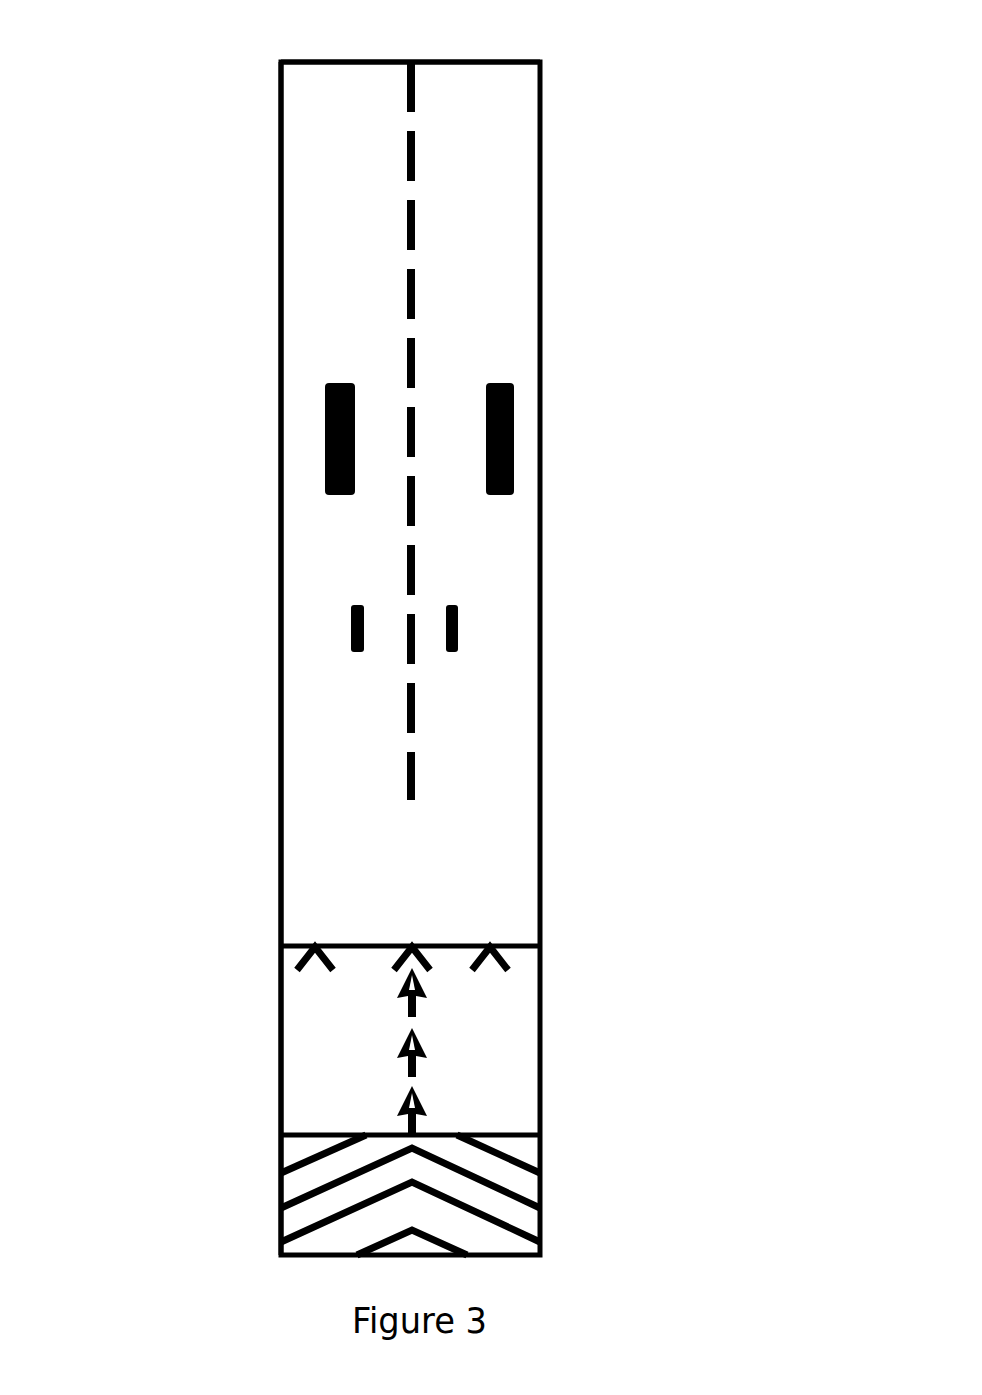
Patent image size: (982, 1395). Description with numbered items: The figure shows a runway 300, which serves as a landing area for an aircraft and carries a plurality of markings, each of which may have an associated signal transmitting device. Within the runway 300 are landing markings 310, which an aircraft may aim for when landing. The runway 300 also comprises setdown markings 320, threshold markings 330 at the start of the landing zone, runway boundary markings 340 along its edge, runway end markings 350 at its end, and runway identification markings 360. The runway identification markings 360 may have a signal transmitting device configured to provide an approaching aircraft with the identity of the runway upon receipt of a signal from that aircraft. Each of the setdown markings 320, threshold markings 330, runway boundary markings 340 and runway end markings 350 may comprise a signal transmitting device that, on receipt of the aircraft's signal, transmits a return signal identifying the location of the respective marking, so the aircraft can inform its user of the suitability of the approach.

The runway 300 is at (278, 57).
The landing markings 310 is at (514, 439).
The setdown markings 320 is at (458, 629).
The threshold markings 330 is at (540, 946).
The runway boundary markings 340 is at (281, 463).
The runway end markings 350 is at (540, 62).
The runway identification markings 360 is at (368, 870).